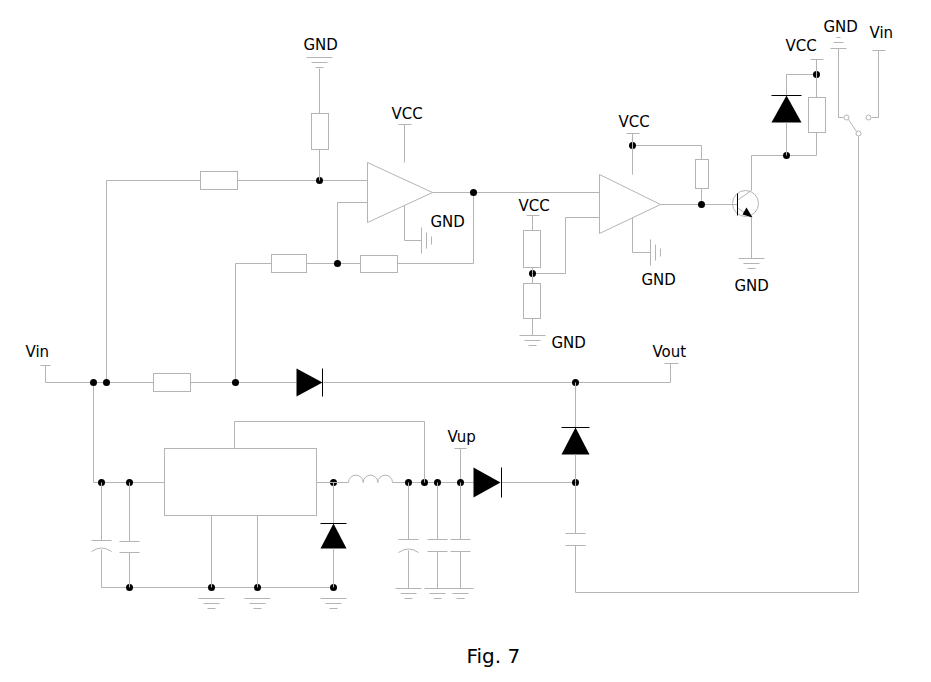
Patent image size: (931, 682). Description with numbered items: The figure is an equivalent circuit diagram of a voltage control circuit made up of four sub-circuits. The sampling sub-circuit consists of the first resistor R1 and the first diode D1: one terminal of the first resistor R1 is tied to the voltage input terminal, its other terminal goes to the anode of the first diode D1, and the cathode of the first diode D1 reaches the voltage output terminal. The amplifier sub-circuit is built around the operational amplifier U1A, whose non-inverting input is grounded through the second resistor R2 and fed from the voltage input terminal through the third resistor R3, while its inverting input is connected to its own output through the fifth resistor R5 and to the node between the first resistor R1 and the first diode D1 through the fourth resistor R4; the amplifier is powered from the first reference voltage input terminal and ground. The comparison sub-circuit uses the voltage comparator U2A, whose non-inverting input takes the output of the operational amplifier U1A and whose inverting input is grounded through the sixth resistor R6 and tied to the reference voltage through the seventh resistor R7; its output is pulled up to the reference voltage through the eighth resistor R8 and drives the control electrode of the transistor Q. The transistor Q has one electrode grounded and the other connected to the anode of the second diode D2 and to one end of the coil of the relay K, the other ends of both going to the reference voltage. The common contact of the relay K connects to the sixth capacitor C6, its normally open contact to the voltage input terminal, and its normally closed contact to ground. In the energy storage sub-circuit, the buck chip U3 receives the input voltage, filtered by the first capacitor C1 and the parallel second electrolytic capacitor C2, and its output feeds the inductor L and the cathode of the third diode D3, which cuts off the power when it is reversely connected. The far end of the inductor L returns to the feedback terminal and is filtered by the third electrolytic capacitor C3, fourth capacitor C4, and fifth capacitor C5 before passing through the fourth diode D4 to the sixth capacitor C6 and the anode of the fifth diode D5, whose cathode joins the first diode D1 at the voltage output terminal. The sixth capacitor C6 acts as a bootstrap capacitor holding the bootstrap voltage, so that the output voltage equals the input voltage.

The first resistor R1 is at (172, 373).
The second resistor R2 is at (333, 125).
The third resistor R3 is at (219, 171).
The fourth resistor R4 is at (289, 278).
The fifth resistor R5 is at (379, 278).
The sixth resistor R6 is at (545, 305).
The seventh resistor R7 is at (519, 245).
The eighth resistor R8 is at (714, 174).
The first capacitor C1 is at (141, 535).
The second electrolytic capacitor C2 is at (90, 535).
The third electrolytic capacitor C3 is at (400, 536).
The fourth capacitor C4 is at (444, 536).
The fifth capacitor C5 is at (473, 536).
The sixth capacitor C6 is at (590, 538).
The first diode D1 is at (310, 372).
The second diode D2 is at (773, 115).
The third diode D3 is at (348, 535).
The fourth diode D4 is at (488, 473).
The fifth diode D5 is at (588, 433).
The inductor L is at (371, 469).
The operational amplifier U1A is at (399, 183).
The voltage comparator U2A is at (629, 193).
The buck chip U3 is at (287, 505).
The transistor Q is at (751, 207).
The relay K is at (733, 321).